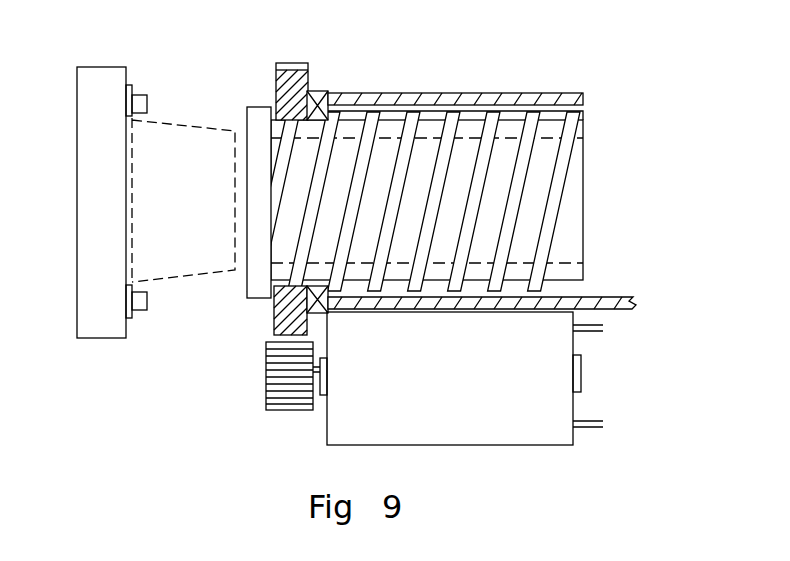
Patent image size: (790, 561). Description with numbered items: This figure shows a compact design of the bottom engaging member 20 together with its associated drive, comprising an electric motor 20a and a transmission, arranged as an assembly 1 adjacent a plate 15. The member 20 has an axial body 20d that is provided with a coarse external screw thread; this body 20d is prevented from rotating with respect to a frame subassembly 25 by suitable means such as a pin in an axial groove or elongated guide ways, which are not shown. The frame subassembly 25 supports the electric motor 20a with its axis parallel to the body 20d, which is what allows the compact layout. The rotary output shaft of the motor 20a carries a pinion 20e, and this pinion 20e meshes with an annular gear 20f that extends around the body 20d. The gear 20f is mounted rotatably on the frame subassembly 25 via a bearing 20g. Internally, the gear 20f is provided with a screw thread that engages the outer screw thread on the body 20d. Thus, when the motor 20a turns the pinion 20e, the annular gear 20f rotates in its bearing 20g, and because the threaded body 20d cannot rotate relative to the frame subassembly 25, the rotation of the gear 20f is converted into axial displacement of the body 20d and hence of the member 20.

The cutting assembly 1 is at (171, 306).
The mounting plate 15 is at (80, 187).
The bottom engaging member 20 is at (245, 282).
The electric motor 20a is at (535, 411).
The axial body 20d is at (547, 166).
The pinion 20e is at (270, 377).
The annular gear 20f is at (298, 64).
The bearing 20g is at (325, 92).
The frame subassembly 25 is at (493, 92).